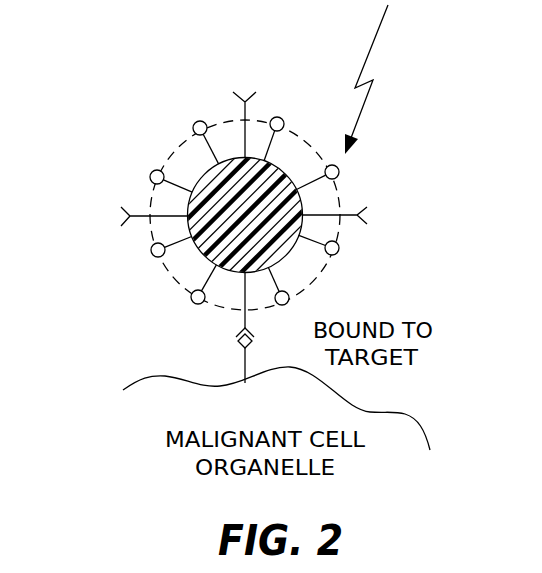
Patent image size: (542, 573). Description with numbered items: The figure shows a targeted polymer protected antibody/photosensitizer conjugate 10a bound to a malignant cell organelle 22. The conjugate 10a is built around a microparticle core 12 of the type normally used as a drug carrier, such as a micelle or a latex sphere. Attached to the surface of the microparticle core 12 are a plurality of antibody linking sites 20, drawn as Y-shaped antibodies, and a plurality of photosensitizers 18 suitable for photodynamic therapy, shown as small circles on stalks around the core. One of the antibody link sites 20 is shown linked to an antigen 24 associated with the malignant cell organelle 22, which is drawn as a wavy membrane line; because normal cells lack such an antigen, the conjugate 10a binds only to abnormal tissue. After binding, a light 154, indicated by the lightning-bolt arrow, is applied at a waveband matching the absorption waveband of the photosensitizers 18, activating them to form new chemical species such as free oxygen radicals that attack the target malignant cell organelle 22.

The polymer protected antibody/photosensitizer conjugate 10a is at (144, 334).
The microparticle core 12 is at (207, 170).
The photosensitizers 18 is at (150, 176).
The antibody linking sites 20 is at (252, 97).
The malignant cell organelle 22 is at (425, 425).
The antigen 24 is at (237, 344).
The light 154 is at (380, 30).